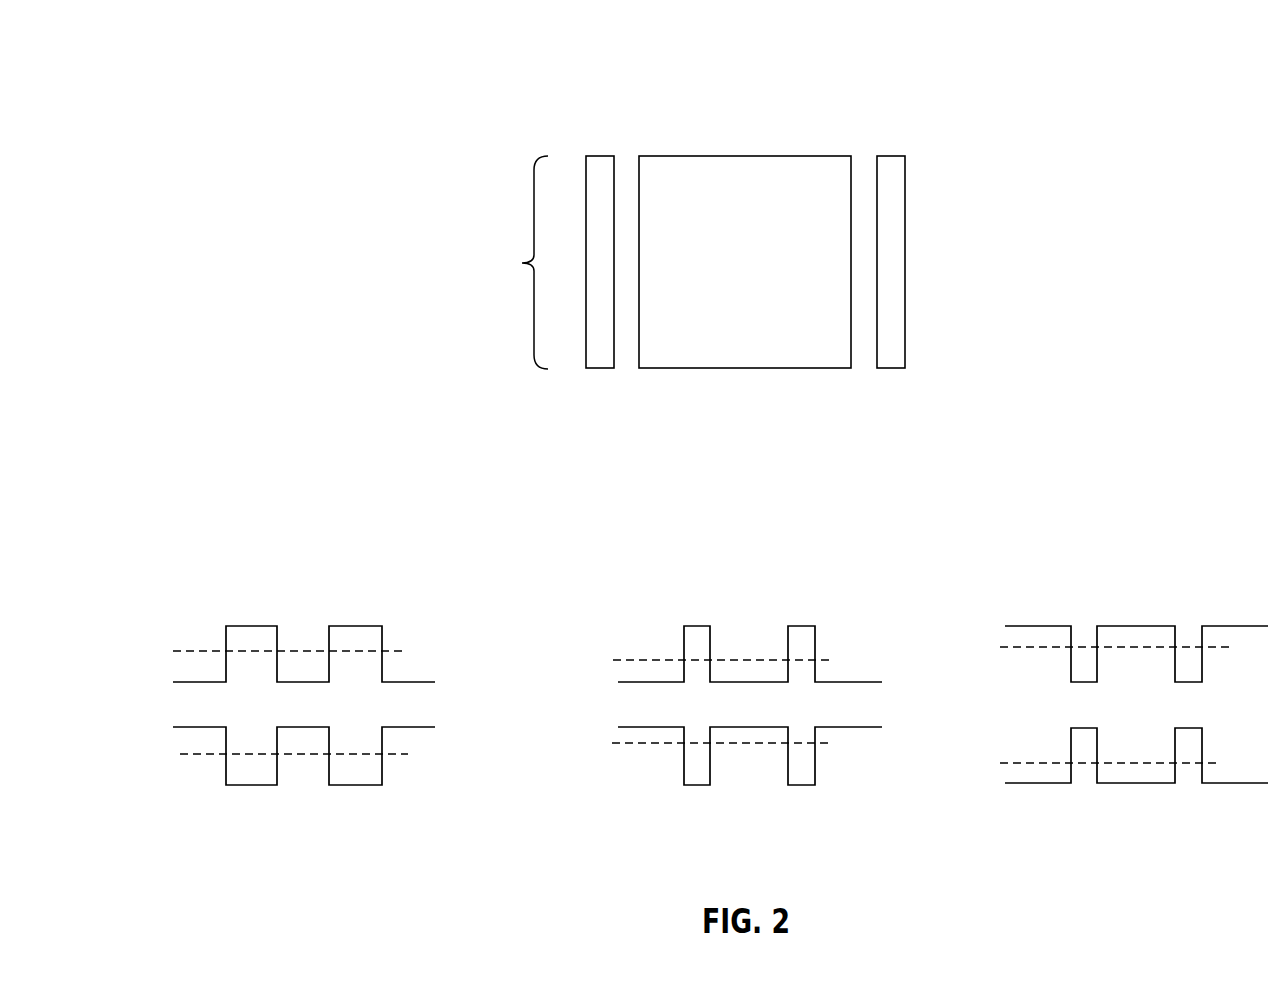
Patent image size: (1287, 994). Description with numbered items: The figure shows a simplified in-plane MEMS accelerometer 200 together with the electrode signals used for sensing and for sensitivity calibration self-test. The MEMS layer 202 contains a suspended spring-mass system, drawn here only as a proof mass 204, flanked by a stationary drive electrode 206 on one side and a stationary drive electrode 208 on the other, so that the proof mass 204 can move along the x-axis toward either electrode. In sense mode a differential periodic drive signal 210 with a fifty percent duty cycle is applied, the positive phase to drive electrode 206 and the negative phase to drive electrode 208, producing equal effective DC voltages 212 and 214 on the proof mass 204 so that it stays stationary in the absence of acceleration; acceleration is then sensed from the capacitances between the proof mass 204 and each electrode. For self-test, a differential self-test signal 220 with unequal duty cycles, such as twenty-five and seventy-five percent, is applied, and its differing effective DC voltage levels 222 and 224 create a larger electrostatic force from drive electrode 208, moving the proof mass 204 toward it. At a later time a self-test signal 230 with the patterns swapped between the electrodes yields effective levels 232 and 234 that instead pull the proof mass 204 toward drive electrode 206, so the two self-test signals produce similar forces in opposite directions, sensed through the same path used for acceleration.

The MEMS accelerometer 200 is at (569, 49).
The MEMS layer 202 is at (509, 262).
The proof mass 204 is at (767, 276).
The drive electrode 206 is at (600, 370).
The drive electrode 208 is at (891, 370).
The drive signal 210 is at (279, 705).
The effective DC voltage 212 is at (312, 650).
The effective DC voltage 214 is at (321, 755).
The self-test signal 220 is at (727, 705).
The second signal average level 222 is at (749, 658).
The second complementary signal average level 224 is at (749, 743).
The self-test signal 230 is at (1112, 701).
The third signal average level 232 is at (1139, 650).
The third complementary signal average level 234 is at (1139, 760).